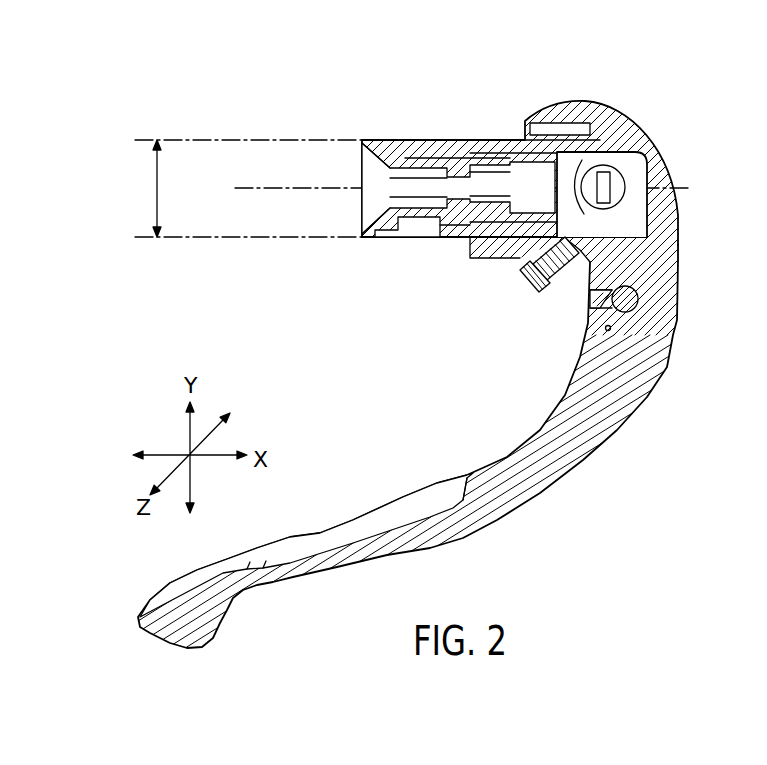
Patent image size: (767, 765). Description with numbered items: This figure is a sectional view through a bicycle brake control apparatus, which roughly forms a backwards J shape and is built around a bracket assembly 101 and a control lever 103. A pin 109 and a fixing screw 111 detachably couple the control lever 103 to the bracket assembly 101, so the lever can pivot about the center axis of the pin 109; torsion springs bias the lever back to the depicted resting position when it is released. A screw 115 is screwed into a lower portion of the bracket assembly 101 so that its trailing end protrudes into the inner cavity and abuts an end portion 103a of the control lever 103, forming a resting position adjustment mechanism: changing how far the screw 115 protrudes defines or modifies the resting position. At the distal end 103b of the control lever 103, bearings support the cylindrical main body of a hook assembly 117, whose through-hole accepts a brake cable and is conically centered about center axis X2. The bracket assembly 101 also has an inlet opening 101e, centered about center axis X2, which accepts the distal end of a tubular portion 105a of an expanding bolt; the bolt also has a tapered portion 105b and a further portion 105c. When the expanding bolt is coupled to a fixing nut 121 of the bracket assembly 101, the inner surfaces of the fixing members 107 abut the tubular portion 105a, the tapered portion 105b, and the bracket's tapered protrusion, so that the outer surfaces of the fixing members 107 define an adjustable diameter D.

The bracket assembly 101 is at (612, 130).
The inlet opening 101e is at (453, 220).
The control lever 103 is at (523, 460).
The end portion 103a is at (608, 262).
The distal end 103b is at (633, 207).
The tubular portion 105a is at (457, 170).
The tapered portion 105b is at (362, 232).
The insert portion 105c is at (410, 158).
The fixing member 107 is at (405, 140).
The pin 109 is at (638, 303).
The fixing screw 111 is at (587, 292).
The screw 115 is at (530, 278).
The hook assembly 117 is at (640, 158).
The fixing nut 121 is at (523, 147).
The diameter D is at (157, 188).
The center axis X2 is at (412, 188).